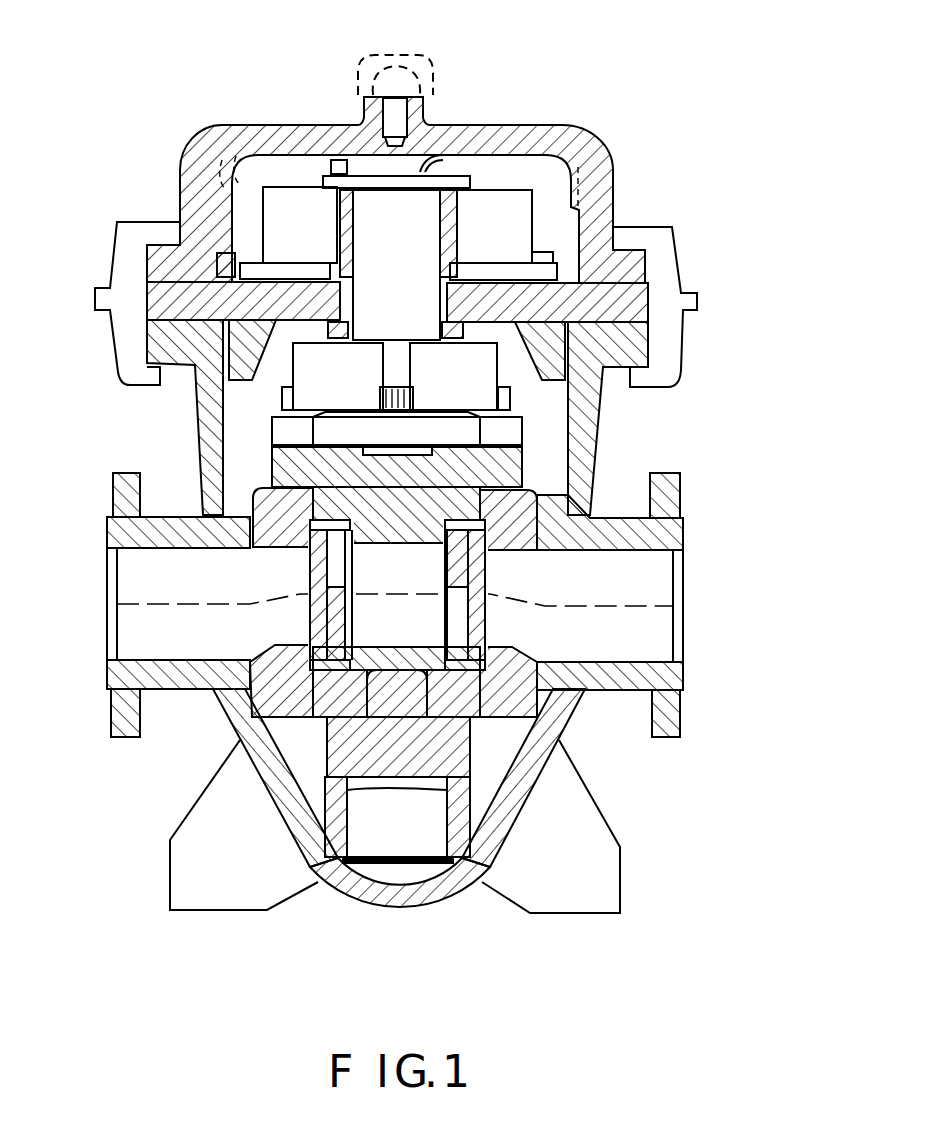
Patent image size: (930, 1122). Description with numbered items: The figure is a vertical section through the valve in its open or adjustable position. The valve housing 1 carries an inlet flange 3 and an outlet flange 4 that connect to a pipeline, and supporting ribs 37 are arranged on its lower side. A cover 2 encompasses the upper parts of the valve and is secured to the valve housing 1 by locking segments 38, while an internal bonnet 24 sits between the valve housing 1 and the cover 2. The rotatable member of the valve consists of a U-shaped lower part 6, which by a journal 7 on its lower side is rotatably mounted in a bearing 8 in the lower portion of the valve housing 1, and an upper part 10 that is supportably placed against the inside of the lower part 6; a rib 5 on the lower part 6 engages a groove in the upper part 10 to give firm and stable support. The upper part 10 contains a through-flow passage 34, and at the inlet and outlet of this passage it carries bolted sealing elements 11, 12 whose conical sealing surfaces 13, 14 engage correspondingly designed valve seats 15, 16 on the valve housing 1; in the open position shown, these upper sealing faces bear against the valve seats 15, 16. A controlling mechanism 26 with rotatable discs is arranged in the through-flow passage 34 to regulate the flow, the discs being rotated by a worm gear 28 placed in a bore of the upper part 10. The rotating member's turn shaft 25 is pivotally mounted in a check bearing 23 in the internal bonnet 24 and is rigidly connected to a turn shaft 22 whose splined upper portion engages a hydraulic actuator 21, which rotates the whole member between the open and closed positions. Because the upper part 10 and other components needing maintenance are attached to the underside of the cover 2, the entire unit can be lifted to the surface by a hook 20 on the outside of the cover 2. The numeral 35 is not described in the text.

The valve housing 1 is at (152, 352).
The cover 2 is at (192, 152).
The inlet flange 3 is at (668, 497).
The outlet flange 4 is at (125, 470).
The rib 5 is at (322, 735).
The lower part 6 is at (452, 743).
The journal 7 is at (367, 843).
The bearing 8 is at (347, 807).
The upper part 10 is at (520, 455).
The sealing element 11 is at (548, 497).
The sealing element 12 is at (265, 503).
The conical sealing surface 13 is at (572, 695).
The conical sealing surface 14 is at (232, 700).
The valve seat 15 is at (540, 660).
The valve seat 16 is at (255, 646).
The hook 20 is at (405, 57).
The hydraulic actuator 21 is at (287, 188).
The turn shaft 22 is at (385, 200).
The check bearing 23 is at (347, 283).
The internal bonnet 24 is at (233, 282).
The turn shaft 25 is at (410, 285).
The controlling mechanism 26 is at (440, 622).
The worm gear 28 is at (428, 357).
The through-flow passage 34 is at (162, 576).
The outlet passage 35 is at (650, 606).
The supporting ribs 37 is at (212, 898).
The locking segments 38 is at (120, 245).